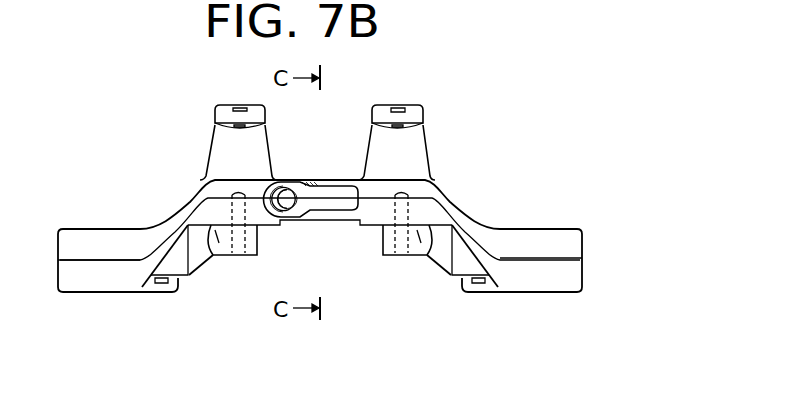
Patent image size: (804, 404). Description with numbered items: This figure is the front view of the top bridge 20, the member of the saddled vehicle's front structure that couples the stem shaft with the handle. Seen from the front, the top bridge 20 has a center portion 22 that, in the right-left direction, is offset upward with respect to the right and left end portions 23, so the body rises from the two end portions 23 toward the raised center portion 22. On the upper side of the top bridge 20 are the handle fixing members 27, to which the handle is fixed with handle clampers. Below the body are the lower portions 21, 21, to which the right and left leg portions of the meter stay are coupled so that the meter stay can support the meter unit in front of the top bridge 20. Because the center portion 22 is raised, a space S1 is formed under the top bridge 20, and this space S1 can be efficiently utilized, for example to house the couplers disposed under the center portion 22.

The top bridge 20 is at (488, 132).
The lower portions 21 is at (223, 260).
The center portion 22 is at (318, 180).
The right and left end portions 23 is at (69, 230).
The handle fixing members 27 is at (423, 108).
The space S1 is at (293, 282).